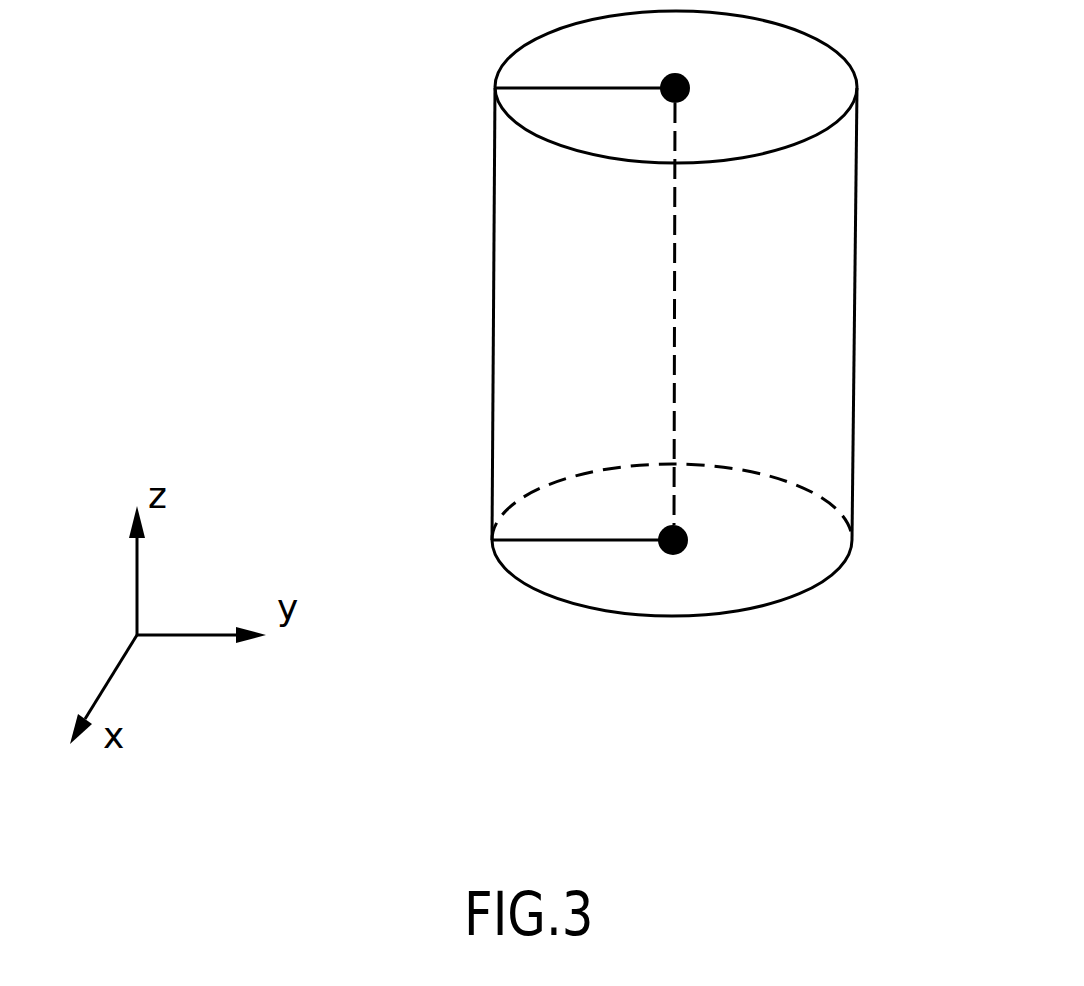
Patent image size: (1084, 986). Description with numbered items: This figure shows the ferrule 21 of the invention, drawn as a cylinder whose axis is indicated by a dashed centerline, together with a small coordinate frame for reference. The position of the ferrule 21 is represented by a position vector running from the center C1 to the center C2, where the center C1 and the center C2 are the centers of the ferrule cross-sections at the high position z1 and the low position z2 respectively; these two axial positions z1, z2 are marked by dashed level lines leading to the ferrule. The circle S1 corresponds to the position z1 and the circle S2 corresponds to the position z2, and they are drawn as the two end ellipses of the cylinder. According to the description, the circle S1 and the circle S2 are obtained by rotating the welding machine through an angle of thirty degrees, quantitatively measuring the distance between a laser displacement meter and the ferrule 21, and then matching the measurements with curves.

The ferrule 21 is at (728, 313).
The circle S1 is at (702, 540).
The circle S2 is at (704, 87).
The center C1 is at (668, 560).
The center C2 is at (677, 68).
The high position Z1 z1 is at (492, 540).
The low position Z2 z2 is at (495, 88).